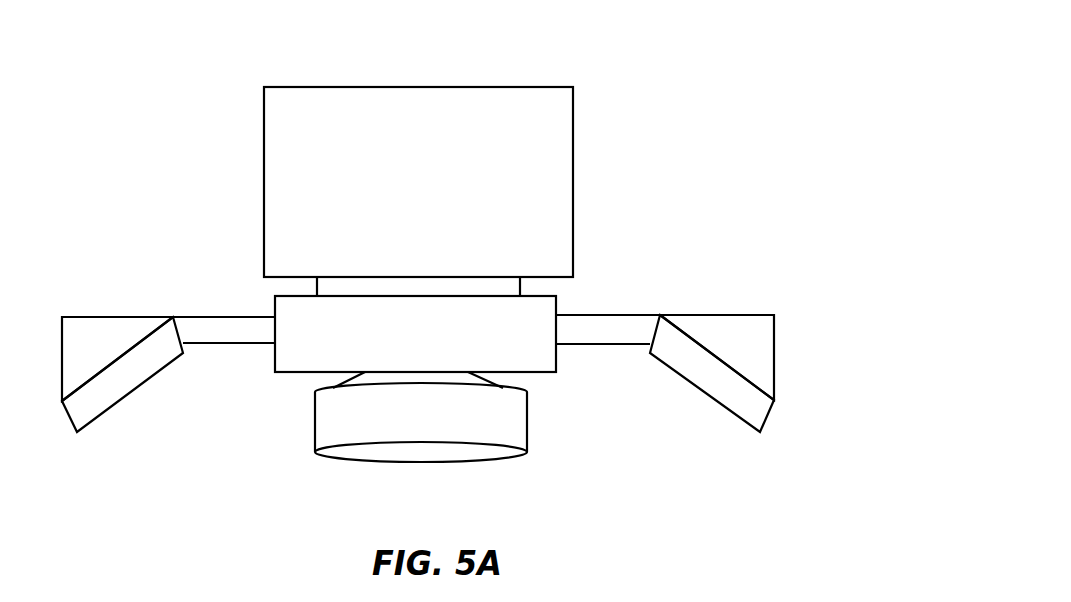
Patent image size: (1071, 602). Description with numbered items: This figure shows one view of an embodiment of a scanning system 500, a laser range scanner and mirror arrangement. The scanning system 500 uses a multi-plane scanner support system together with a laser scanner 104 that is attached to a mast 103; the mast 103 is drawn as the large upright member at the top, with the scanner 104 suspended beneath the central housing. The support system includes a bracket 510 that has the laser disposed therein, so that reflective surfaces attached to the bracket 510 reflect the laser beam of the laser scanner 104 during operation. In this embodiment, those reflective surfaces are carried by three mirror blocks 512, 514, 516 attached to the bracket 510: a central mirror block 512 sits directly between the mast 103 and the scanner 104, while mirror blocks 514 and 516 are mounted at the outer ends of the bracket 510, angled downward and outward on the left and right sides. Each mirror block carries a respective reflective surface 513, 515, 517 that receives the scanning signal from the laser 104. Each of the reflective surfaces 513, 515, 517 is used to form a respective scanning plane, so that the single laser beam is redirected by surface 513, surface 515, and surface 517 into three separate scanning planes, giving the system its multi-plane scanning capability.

The scanning system 500 is at (690, 88).
The mast 103 is at (392, 157).
The laser scanner 104 is at (394, 423).
The bracket 510 is at (237, 327).
The mirror block 512 is at (458, 347).
The reflective surface 513 is at (278, 377).
The mirror block 514 is at (98, 333).
The reflective surface 515 is at (105, 402).
The mirror block 516 is at (729, 335).
The reflective surface 517 is at (717, 392).